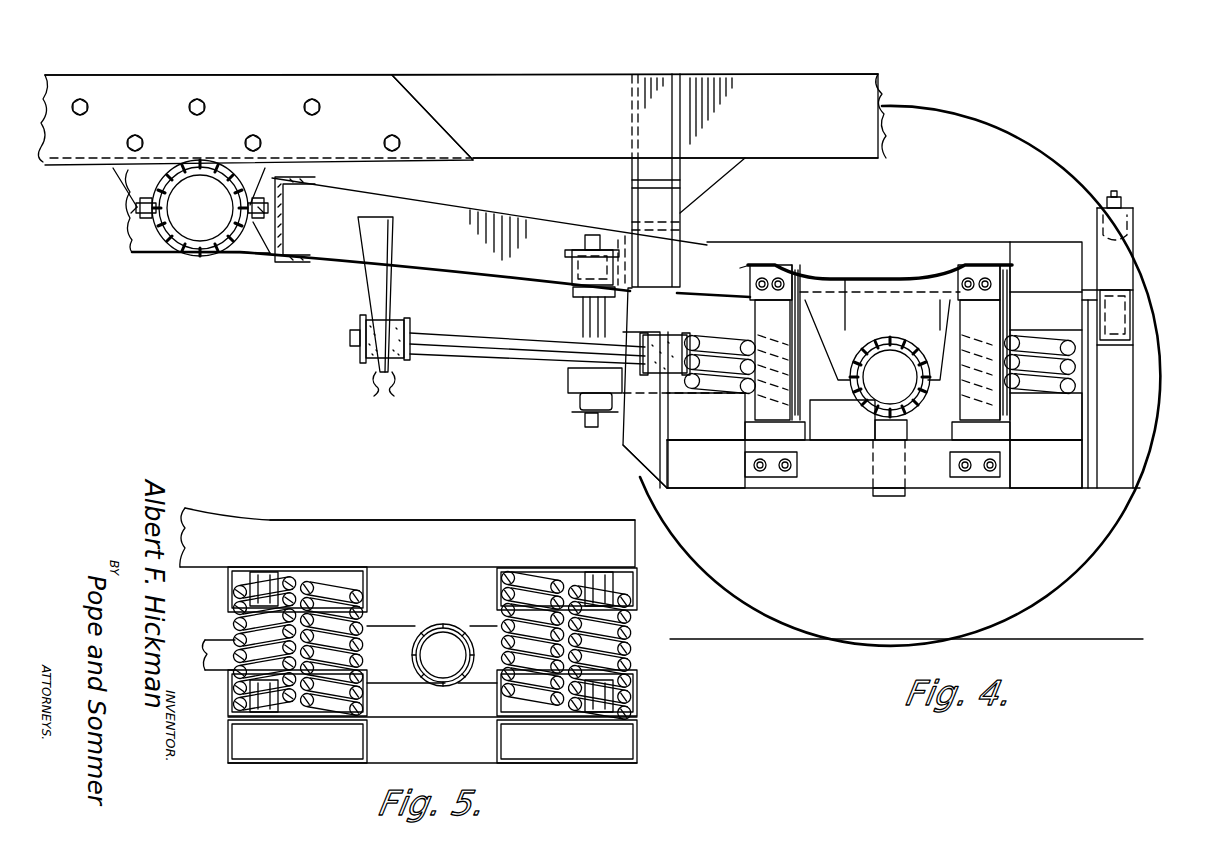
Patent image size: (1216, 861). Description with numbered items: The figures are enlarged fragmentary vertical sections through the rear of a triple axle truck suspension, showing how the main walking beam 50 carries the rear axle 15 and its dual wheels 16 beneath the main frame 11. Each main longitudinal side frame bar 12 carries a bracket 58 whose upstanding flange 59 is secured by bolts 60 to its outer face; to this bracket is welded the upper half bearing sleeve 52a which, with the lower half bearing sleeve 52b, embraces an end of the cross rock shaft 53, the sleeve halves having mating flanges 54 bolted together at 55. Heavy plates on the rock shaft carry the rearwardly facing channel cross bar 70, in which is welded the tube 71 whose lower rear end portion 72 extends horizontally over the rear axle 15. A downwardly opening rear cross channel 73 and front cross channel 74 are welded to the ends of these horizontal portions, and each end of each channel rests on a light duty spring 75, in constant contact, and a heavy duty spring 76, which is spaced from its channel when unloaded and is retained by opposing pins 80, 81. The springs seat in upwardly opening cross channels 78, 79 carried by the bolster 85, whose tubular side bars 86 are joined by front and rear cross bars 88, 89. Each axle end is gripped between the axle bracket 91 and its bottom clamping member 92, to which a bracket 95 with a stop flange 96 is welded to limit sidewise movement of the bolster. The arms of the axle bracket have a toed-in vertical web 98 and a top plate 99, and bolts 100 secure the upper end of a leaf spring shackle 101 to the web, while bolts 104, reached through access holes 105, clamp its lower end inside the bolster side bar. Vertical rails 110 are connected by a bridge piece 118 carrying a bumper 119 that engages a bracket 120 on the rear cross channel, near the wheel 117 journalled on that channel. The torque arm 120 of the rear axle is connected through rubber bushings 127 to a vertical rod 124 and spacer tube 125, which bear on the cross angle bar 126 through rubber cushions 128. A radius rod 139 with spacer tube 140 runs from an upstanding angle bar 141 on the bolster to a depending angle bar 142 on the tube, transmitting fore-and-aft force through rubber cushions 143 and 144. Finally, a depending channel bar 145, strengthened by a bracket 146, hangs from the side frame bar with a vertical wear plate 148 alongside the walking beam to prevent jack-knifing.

In FIG. 4, the main frame 11 is at (890, 92).
In FIG. 4, the main longitudinal side frame bars 12 is at (794, 76).
In FIG. 4, the rear axle 15 is at (890, 377).
In FIG. 5, the rear axle 15 is at (452, 634).
In FIG. 4, the dual wheels 16 is at (1092, 550).
In FIG. 4, the main walking beam 50 is at (416, 188).
In FIG. 5, the main walking beam 50 is at (257, 510).
In FIG. 4, the upper half of bearing sleeve 52a is at (222, 166).
In FIG. 4, the lower half of bearing sleeve 52b is at (215, 255).
In FIG. 4, the cross rock shaft 53 is at (200, 208).
In FIG. 4, the flanges 54 is at (136, 208).
In FIG. 4, the bolts 55 is at (124, 200).
In FIG. 4, the bracket 58 is at (450, 128).
In FIG. 4, the upstanding flange 59 is at (378, 78).
In FIG. 4, the bolts 60 is at (188, 107).
In FIG. 4, the cross bar 70 is at (295, 265).
In FIG. 4, the tube 71 is at (415, 268).
In FIG. 5, the tube 71 is at (194, 512).
In FIG. 4, the lower rear end portion 72 is at (1038, 242).
In FIG. 5, the lower rear end portion 72 is at (462, 520).
In FIG. 4, the rear cross channel 73 is at (1050, 300).
In FIG. 5, the rear cross channel 73 is at (638, 580).
In FIG. 4, the front cross channel 74 is at (718, 300).
In FIG. 5, the front cross channel 74 is at (228, 588).
In FIG. 4, the light duty helical compression spring 75 is at (746, 340).
In FIG. 5, the light duty helical compression spring 75 is at (368, 640).
In FIG. 4, the heavy duty helical compression spring 76 is at (700, 394).
In FIG. 5, the heavy duty helical compression spring 76 is at (226, 628).
In FIG. 4, the upwardly opening cross channel 78 is at (1032, 440).
In FIG. 5, the upwardly opening cross channel 78 is at (640, 698).
In FIG. 4, the upwardly opening cross channel 79 is at (714, 436).
In FIG. 5, the upwardly opening cross channel 79 is at (228, 700).
In FIG. 5, the pin 80 is at (264, 580).
In FIG. 5, the pin 81 is at (280, 714).
In FIG. 4, the bolster 85 is at (878, 526).
In FIG. 5, the bolster 85 is at (558, 768).
In FIG. 4, the side bars 86 is at (842, 482).
In FIG. 5, the side bars 86 is at (426, 726).
In FIG. 5, the front cross bar 88 is at (228, 756).
In FIG. 5, the rear cross bar 89 is at (640, 752).
In FIG. 4, the axle bracket 91 is at (856, 258).
In FIG. 4, the bottom clamping member 92 is at (842, 420).
In FIG. 4, the bracket 95 is at (885, 440).
In FIG. 4, the bumper or stop flange 96 is at (896, 496).
In FIG. 4, the vertical web 98 is at (938, 266).
In FIG. 4, the top plate 99 is at (792, 260).
In FIG. 4, the bolts 100 is at (778, 282).
In FIG. 4, the leaf spring shackle 101 is at (948, 322).
In FIG. 4, the bolts 104 is at (758, 478).
In FIG. 4, the access holes 105 is at (772, 478).
In FIG. 4, the vertical rails 110 is at (1135, 398).
In FIG. 4, the wheel 117 is at (1140, 358).
In FIG. 4, the bridge piece 118 is at (1135, 210).
In FIG. 4, the bumper 119 is at (1138, 236).
In FIG. 4, the torque arm 120 is at (565, 378).
In FIG. 4, the vertical rod 124 is at (588, 425).
In FIG. 4, the spacer tube 125 is at (582, 324).
In FIG. 4, the cross angle bar 126 is at (616, 226).
In FIG. 4, the rubber bushings 127 is at (572, 408).
In FIG. 4, the rubber cushions 128 is at (572, 268).
In FIG. 4, the radius rod 139 is at (348, 338).
In FIG. 4, the spacer tube 140 is at (458, 355).
In FIG. 4, the upstanding angle bar 141 is at (638, 454).
In FIG. 4, the depending angle bar 142 is at (363, 240).
In FIG. 4, the rubber cushions 143 is at (662, 316).
In FIG. 4, the rubber cushions 144 is at (376, 388).
In FIG. 4, the depending channel bar 145 is at (690, 212).
In FIG. 4, the bracket 146 is at (644, 164).
In FIG. 4, the vertical wear plate 148 is at (690, 222).